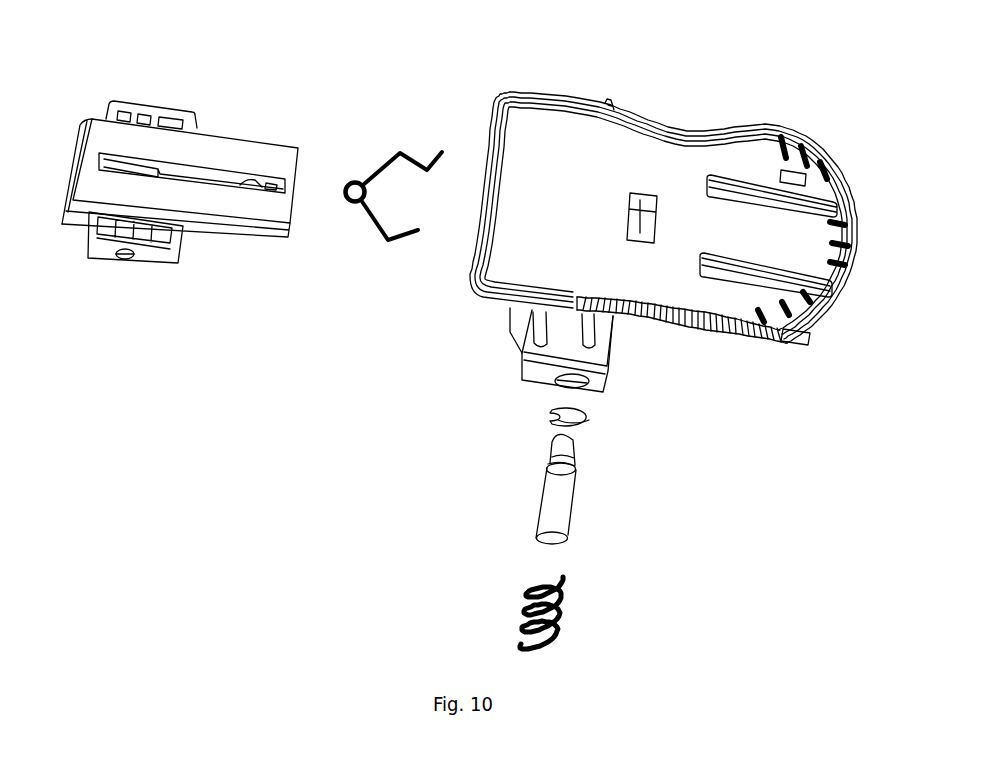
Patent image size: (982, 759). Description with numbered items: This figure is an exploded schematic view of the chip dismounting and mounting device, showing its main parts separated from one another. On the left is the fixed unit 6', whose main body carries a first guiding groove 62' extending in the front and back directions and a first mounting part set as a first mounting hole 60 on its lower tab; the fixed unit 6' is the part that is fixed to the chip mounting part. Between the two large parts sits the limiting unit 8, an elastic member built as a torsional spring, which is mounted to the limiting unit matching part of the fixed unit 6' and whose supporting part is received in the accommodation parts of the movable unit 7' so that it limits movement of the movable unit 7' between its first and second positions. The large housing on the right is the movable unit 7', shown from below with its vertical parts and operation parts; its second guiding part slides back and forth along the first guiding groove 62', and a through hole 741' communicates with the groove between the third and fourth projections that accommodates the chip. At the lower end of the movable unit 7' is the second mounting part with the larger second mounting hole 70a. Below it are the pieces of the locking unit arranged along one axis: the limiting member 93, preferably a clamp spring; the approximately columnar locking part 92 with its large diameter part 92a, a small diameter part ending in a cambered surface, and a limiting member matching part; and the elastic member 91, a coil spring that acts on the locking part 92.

The fixed unit 6' is at (180, 149).
The first guiding groove 62' is at (194, 226).
The first mounting hole 60 is at (127, 259).
The limiting unit 8 is at (355, 180).
The movable unit 7' is at (663, 183).
The through hole 741' is at (673, 144).
The second mounting hole 70a is at (600, 383).
The limiting member 93 is at (590, 417).
The locking part 92 is at (557, 505).
The large diameter part 92a is at (547, 467).
The elastic member 91 is at (567, 607).